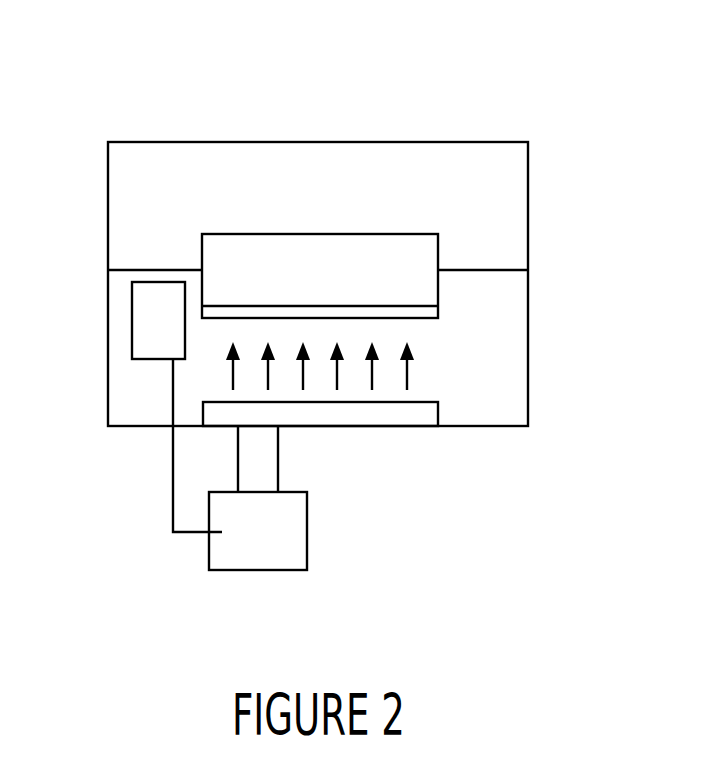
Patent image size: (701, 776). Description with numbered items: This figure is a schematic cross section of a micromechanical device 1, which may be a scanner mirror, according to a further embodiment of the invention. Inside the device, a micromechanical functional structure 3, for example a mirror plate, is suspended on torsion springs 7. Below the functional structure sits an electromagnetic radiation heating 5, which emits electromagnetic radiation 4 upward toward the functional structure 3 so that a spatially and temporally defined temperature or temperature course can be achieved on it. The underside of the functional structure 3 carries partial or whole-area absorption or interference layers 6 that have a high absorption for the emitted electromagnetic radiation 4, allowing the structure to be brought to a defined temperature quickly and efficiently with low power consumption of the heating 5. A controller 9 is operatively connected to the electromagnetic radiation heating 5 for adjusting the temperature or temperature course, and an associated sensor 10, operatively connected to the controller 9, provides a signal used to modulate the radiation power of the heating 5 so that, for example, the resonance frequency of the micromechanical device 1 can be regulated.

The micromechanical device 1 is at (493, 115).
The micromechanical functional structure 3 is at (427, 245).
The electromagnetic radiation 4 is at (232, 373).
The electromagnetic radiation heating 5 is at (413, 417).
The absorption or interference layers 6 is at (433, 312).
The torsion springs 7 is at (493, 270).
The controller 9 is at (265, 557).
The sensor 10 is at (148, 311).